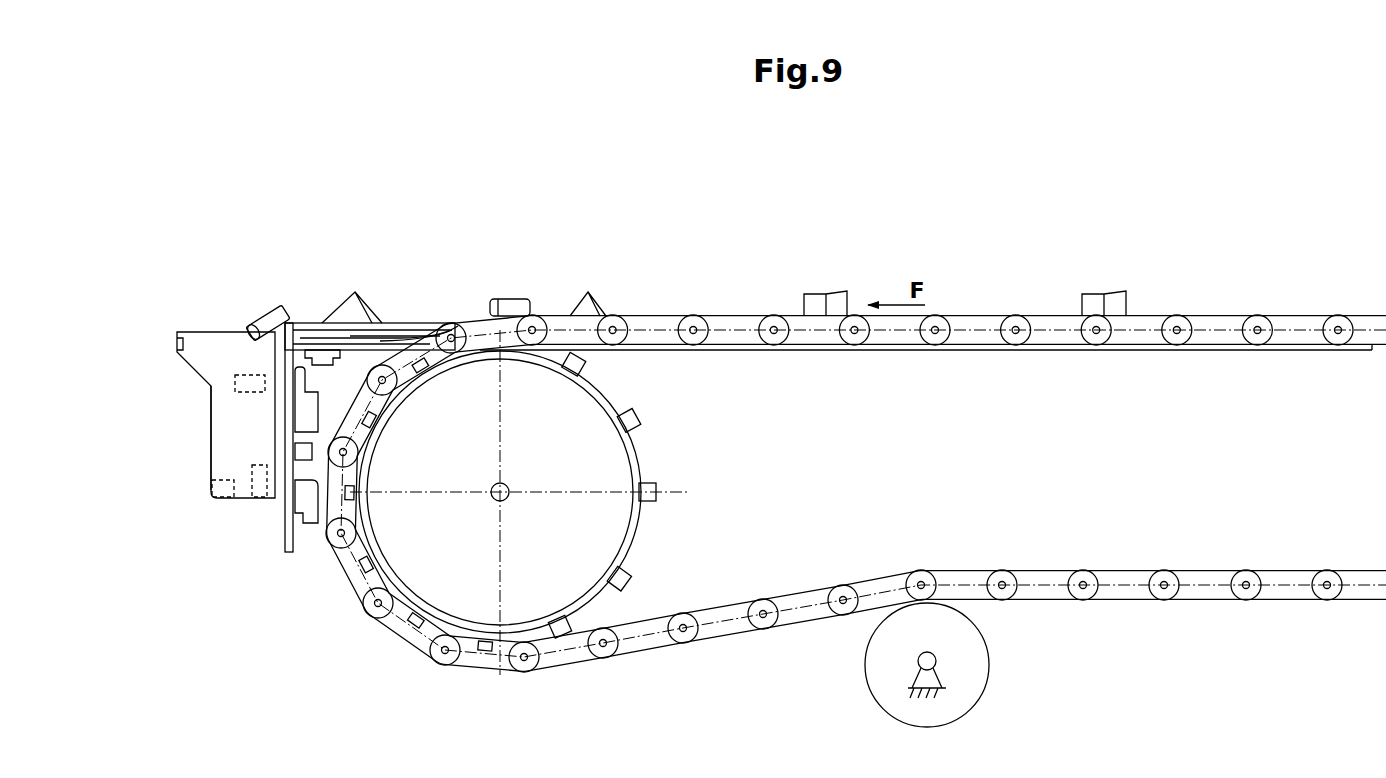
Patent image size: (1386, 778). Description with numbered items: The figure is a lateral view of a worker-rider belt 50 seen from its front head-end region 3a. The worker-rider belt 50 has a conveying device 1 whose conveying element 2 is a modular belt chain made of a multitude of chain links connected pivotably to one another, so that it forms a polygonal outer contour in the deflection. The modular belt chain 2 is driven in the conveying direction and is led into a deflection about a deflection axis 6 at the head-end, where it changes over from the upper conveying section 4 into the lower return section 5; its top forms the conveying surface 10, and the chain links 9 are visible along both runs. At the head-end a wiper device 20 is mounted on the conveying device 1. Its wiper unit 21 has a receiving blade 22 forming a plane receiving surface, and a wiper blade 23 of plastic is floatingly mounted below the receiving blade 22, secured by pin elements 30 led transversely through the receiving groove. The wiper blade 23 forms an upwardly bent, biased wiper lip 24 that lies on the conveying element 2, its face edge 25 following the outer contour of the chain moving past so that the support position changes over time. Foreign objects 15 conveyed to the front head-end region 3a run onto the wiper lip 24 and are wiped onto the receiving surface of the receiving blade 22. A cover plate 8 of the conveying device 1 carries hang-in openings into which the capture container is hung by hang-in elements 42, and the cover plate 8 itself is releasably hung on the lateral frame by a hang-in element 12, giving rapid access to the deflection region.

The conveying device 1 is at (1110, 627).
The conveying element 2 is at (955, 312).
The front head-end region 3a is at (192, 421).
The conveying section 4 is at (1290, 312).
The return section 5 is at (1265, 607).
The deflection axis 6 is at (505, 497).
The cover plate 8 is at (288, 530).
The chain rollers 9 is at (985, 320).
The conveying surface 10 is at (660, 316).
The hang-in element 12 is at (312, 513).
The foreign objects 15 is at (350, 303).
The wiper device 20 is at (263, 308).
The wiper unit 21 is at (387, 320).
The receiving blade 22 is at (318, 337).
The wiper blade 23 is at (397, 323).
The wiper lip 24 is at (433, 325).
The face edge 25 is at (443, 323).
The pin elements 30 is at (192, 387).
The hang-in elements 42 is at (298, 380).
The worker-rider belt 50 is at (950, 262).